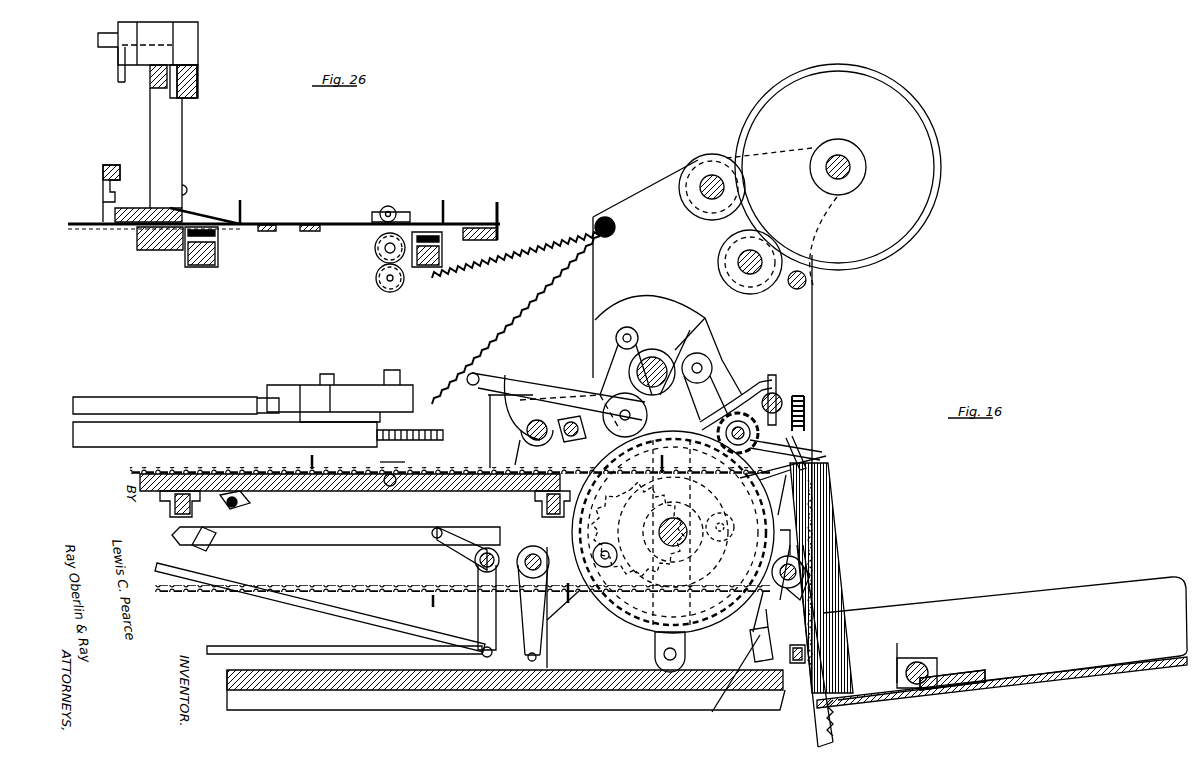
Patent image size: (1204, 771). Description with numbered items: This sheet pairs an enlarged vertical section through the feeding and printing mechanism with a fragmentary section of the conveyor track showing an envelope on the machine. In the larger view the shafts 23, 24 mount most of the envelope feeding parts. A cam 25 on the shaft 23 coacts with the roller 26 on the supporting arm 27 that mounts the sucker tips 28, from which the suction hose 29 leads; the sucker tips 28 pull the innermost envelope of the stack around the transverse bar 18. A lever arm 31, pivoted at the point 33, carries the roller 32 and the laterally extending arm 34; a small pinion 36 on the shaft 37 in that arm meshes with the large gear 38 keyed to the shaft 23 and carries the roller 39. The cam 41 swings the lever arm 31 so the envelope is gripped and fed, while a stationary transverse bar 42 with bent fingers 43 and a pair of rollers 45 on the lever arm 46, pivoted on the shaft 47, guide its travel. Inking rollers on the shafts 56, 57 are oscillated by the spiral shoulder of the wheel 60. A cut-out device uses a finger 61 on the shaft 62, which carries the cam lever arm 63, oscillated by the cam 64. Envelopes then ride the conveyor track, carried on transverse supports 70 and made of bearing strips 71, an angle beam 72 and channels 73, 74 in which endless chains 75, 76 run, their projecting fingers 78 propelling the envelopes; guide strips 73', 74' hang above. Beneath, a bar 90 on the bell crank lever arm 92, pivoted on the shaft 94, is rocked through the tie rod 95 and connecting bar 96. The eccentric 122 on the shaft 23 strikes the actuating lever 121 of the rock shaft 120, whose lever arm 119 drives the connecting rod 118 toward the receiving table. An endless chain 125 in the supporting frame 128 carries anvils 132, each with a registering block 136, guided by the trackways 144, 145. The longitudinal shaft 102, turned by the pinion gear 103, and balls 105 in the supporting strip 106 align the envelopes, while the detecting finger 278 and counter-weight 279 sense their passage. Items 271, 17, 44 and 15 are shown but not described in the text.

In FIG. 26, the registering block 136 is at (108, 165).
In FIG. 26, the anvil 132 is at (116, 223).
In FIG. 16, the anvil 132 is at (490, 465).
In FIG. 26, the flat intermediate bearing strips 71 is at (260, 232).
In FIG. 26, the guide strip 74' is at (224, 204).
In FIG. 26, the channel 74 is at (176, 260).
In FIG. 26, the endless chain 76 is at (216, 241).
In FIG. 26, the supporting strip 106 is at (382, 213).
In FIG. 26, the balls 105 is at (394, 208).
In FIG. 26, the longitudinal shaft 102 is at (375, 251).
In FIG. 26, the pinion gear 103 is at (377, 280).
In FIG. 26, the guide strip 73' is at (462, 202).
In FIG. 26, the endless chain 75 is at (440, 239).
In FIG. 26, the channel 73 is at (441, 269).
In FIG. 16, the channel 73 is at (350, 492).
In FIG. 26, the angle beam 72 is at (500, 228).
In FIG. 16, the wheel 60 is at (885, 256).
In FIG. 16, the shaft 56 is at (702, 194).
In FIG. 16, the shaft 57 is at (742, 258).
In FIG. 16, the shaft 47 is at (504, 329).
In FIG. 16, the cam 41 is at (673, 303).
In FIG. 16, the cam 64 is at (616, 360).
In FIG. 16, the cam lever arm 63 is at (602, 375).
In FIG. 16, the roller 32 is at (709, 360).
In FIG. 16, the shaft 24 is at (690, 337).
In FIG. 16, the small pinion 36 is at (739, 416).
In FIG. 16, the lever arm 31 is at (718, 390).
In FIG. 16, the bent fingers 43 is at (772, 374).
In FIG. 16, the shaft 37 is at (778, 394).
In FIG. 16, the stationary transverse bar 42 is at (800, 367).
In FIG. 16, the laterally extending arm 34 is at (798, 438).
In FIG. 16, the roller 39 is at (790, 450).
In FIG. 16, the large gear 38 is at (823, 458).
In FIG. 16, the cam 25 is at (702, 494).
In FIG. 16, the shaft 23 is at (680, 542).
In FIG. 16, the roller 26 is at (730, 523).
In FIG. 16, the eccentric 122 is at (618, 585).
In FIG. 16, the perpendicular projecting fingers 78 is at (318, 459).
In FIG. 16, the transverse supports 70 is at (164, 507).
In FIG. 16, the pivot 271 is at (245, 504).
In FIG. 16, the longitudinal trackway 144 is at (170, 404).
In FIG. 16, the longitudinal trackway 145 is at (190, 428).
In FIG. 16, the supporting frame 128 is at (355, 382).
In FIG. 16, the endless chain 125 is at (418, 430).
In FIG. 16, the detecting finger 278 is at (377, 470).
In FIG. 16, the bar 90 is at (328, 527).
In FIG. 16, the counter-weight 279 is at (212, 554).
In FIG. 16, the connecting bar 96 is at (375, 617).
In FIG. 16, the tie rod 95 is at (268, 653).
In FIG. 16, the horizontal connecting rod 118 is at (310, 670).
In FIG. 16, the bell crank lever arm 92 is at (439, 551).
In FIG. 16, the transverse shaft 94 is at (474, 562).
In FIG. 16, the transverse rock shaft 120 is at (532, 554).
In FIG. 16, the actuating lever 121 is at (556, 592).
In FIG. 16, the lever arm 119 is at (574, 612).
In FIG. 16, the pivot point 33 is at (676, 655).
In FIG. 16, the supporting arm 27 is at (758, 608).
In FIG. 16, the suction hose 29 is at (720, 709).
In FIG. 16, the sucker tips 28 is at (812, 500).
In FIG. 16, the transverse bar 18 is at (795, 568).
In FIG. 16, the table 17 is at (922, 655).
In FIG. 16, the shaft 62 is at (530, 384).
In FIG. 16, the lever arm 46 is at (540, 398).
In FIG. 16, the rollers 45 is at (610, 436).
In FIG. 16, the pin 44 is at (528, 424).
In FIG. 16, the finger 61 is at (568, 436).
In FIG. 16, the plate 15 is at (510, 468).